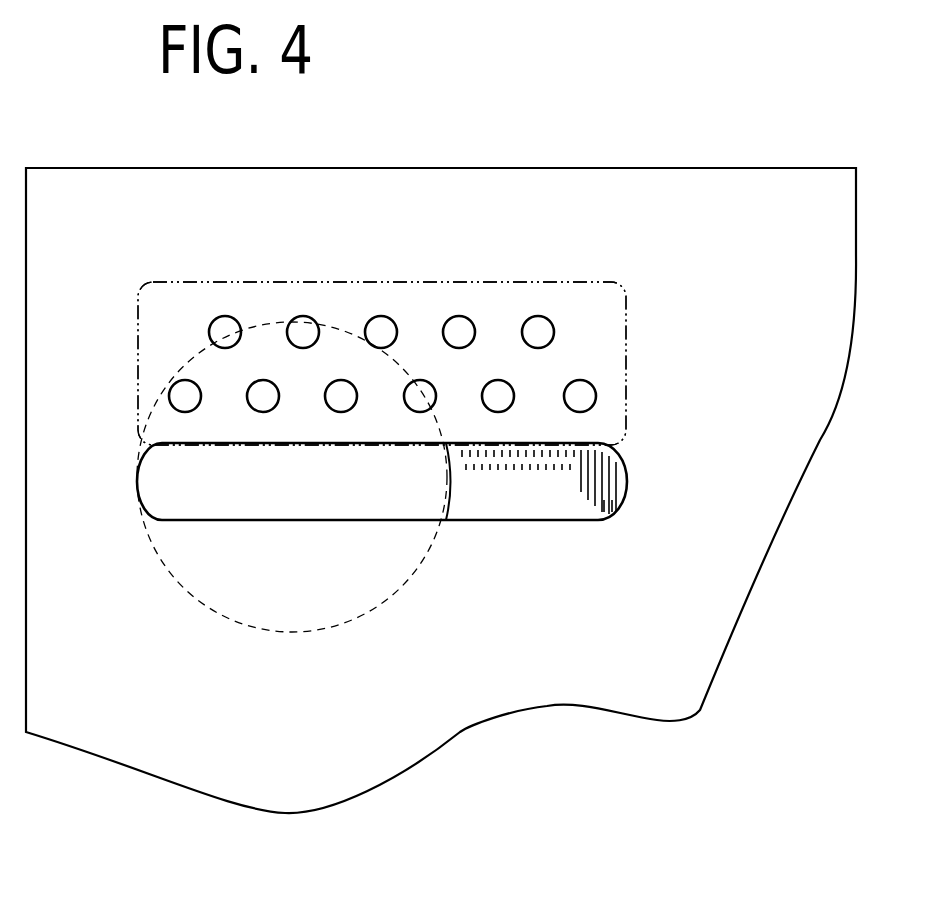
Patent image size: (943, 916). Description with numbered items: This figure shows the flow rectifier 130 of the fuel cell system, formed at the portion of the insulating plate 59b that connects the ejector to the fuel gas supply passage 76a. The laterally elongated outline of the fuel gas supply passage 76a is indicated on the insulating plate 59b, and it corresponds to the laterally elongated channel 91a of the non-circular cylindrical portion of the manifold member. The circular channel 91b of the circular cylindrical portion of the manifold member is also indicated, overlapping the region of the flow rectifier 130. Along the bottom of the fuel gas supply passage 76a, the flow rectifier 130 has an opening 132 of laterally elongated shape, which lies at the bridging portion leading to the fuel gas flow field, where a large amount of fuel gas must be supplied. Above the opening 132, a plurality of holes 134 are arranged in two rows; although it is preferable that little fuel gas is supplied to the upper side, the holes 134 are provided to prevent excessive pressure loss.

The insulating plate 59b is at (568, 93).
The fuel gas supply passage 76a is at (626, 328).
The channel 91a is at (459, 363).
The circular channel 91b is at (273, 633).
The flow rectifier 130 is at (363, 312).
The holes 134 is at (272, 293).
The opening 132 is at (298, 487).